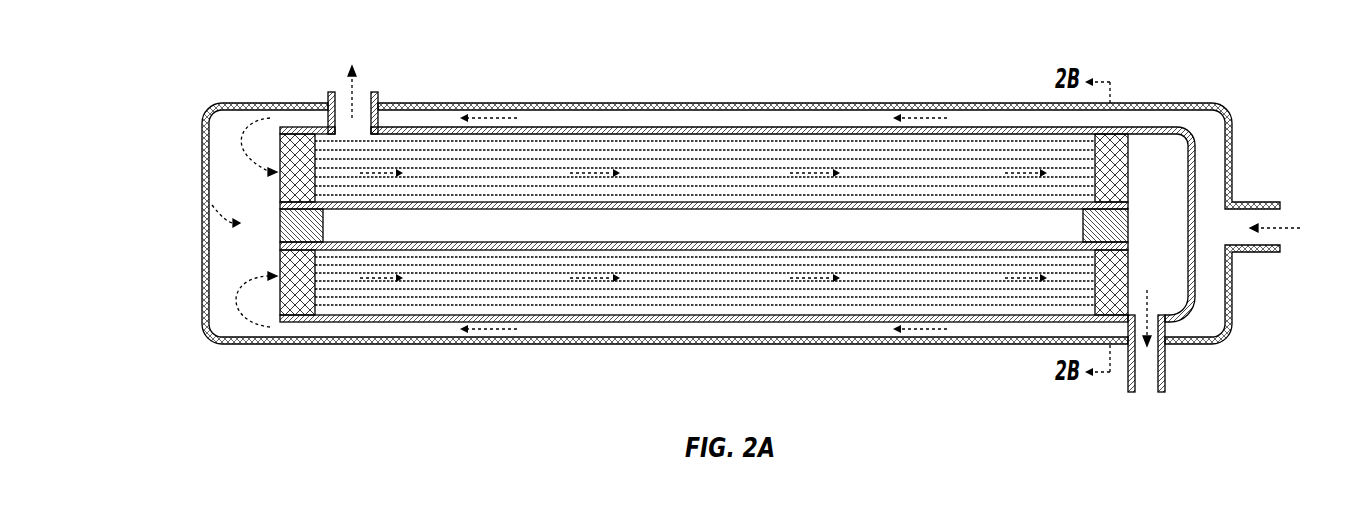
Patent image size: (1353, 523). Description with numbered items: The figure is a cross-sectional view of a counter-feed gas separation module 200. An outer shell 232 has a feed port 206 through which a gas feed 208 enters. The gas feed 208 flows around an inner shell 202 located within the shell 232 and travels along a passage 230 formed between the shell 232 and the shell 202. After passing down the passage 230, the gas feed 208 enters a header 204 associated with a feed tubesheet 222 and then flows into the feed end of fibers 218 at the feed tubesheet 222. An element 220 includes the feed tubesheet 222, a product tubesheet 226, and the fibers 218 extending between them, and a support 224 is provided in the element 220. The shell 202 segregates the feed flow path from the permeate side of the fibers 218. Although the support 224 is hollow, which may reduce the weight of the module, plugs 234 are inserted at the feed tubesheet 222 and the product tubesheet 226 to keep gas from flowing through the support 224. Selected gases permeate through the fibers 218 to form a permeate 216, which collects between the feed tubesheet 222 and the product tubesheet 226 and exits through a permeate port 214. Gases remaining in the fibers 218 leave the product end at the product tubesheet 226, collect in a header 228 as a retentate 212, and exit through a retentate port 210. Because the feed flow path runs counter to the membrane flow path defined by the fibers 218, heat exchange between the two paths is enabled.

The gas separation module 200 is at (218, 70).
The shell 202 is at (700, 131).
The header 204 is at (200, 200).
The feed port 206 is at (1255, 252).
The gas feed 208 is at (1302, 228).
The retentate port 210 is at (1165, 355).
The retentate 212 is at (1150, 307).
The permeate port 214 is at (375, 97).
The permeate 216 is at (350, 82).
The fibers 218 is at (540, 155).
The element 220 is at (277, 152).
The feed tubesheet 222 is at (280, 295).
The support 224 is at (723, 239).
The product tubesheet 226 is at (1130, 150).
The header 228 is at (1162, 163).
The passage 230 is at (795, 121).
The shell 232 is at (630, 108).
The plugs 234 is at (280, 222).